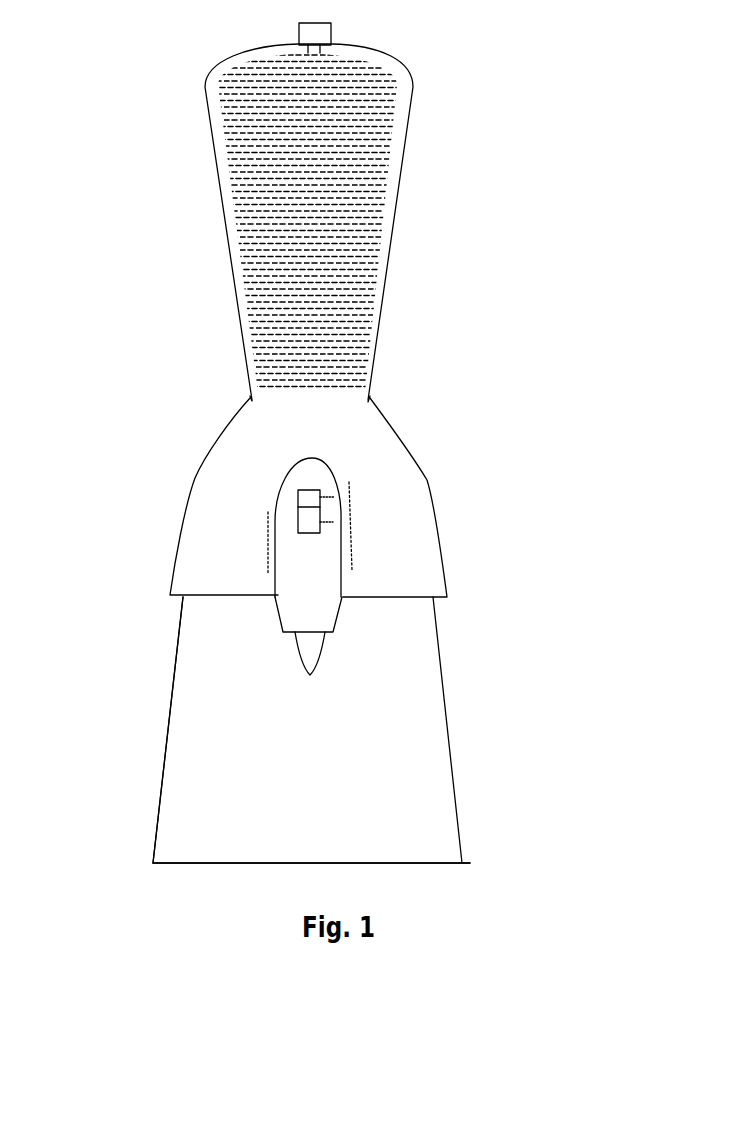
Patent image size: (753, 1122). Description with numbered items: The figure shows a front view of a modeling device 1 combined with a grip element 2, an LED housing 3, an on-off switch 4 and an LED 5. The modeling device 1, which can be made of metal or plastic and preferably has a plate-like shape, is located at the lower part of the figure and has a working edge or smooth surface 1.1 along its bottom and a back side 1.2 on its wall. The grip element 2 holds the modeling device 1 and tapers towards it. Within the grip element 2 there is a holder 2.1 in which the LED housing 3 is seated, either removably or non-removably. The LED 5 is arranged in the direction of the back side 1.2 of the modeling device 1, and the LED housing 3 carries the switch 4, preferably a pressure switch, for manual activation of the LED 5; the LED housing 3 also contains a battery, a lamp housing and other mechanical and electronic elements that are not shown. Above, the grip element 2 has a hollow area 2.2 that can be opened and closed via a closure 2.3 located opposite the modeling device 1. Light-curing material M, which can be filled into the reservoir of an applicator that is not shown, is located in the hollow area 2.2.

The modeling device 1 is at (402, 827).
The working edge or smooth surface 1.1 is at (470, 861).
The back side 1.2 is at (228, 703).
The grip element 2 is at (387, 273).
The holder 2.1 is at (267, 525).
The hollow area 2.2 is at (387, 193).
The closure 2.3 is at (325, 37).
The LED housing 3 is at (317, 472).
The on-off switch 4 is at (310, 517).
The LED 5 is at (310, 655).
The light-curing material M is at (276, 155).